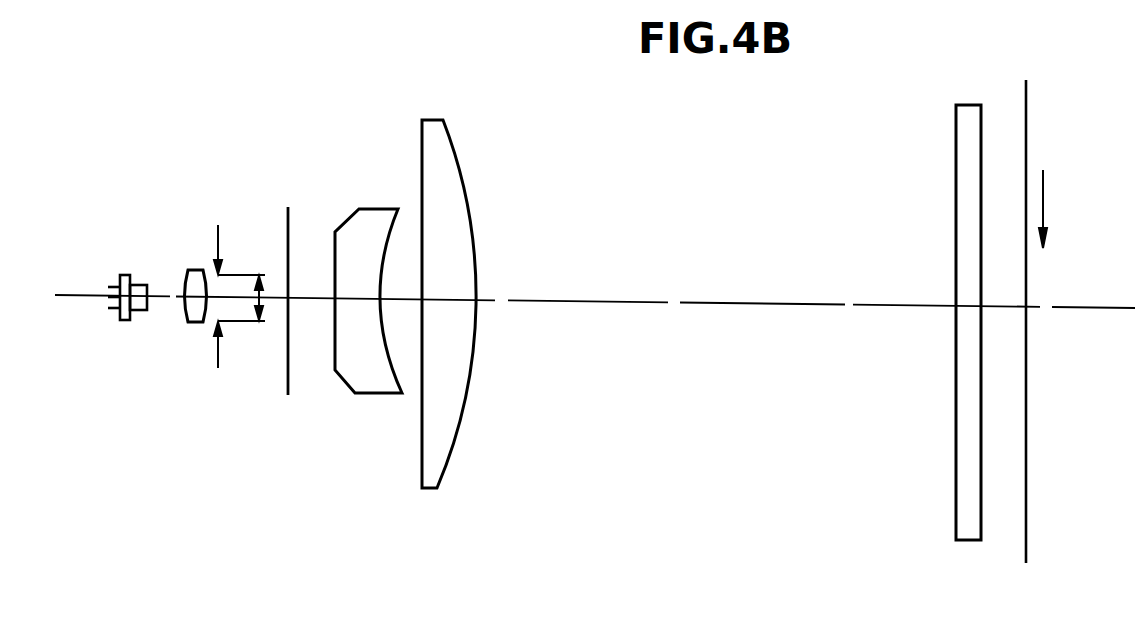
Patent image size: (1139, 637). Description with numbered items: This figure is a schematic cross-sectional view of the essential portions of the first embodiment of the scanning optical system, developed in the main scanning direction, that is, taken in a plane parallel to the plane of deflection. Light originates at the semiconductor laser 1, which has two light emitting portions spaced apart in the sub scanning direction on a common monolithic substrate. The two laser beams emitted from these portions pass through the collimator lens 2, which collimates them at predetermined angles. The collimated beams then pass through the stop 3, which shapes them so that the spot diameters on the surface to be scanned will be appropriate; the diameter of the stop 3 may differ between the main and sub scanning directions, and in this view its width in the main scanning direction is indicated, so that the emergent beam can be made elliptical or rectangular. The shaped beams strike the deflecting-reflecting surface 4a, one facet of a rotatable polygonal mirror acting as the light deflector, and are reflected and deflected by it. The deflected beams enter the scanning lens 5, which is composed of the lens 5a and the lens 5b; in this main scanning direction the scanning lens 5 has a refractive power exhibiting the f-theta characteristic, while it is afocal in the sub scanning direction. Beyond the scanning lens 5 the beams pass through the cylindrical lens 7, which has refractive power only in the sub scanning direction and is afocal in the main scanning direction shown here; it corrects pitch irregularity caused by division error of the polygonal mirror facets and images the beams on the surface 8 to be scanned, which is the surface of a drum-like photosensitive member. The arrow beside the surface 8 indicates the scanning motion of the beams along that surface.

The semiconductor laser 1 is at (132, 273).
The collimator lens 2 is at (197, 268).
The stop 3 is at (219, 240).
The deflecting-reflecting surface 4a is at (289, 212).
The scanning lens 5 is at (468, 67).
The lens 5a is at (376, 207).
The lens 5b is at (435, 127).
The cylindrical lens 7 is at (955, 122).
The surface to be scanned 8 is at (1027, 103).